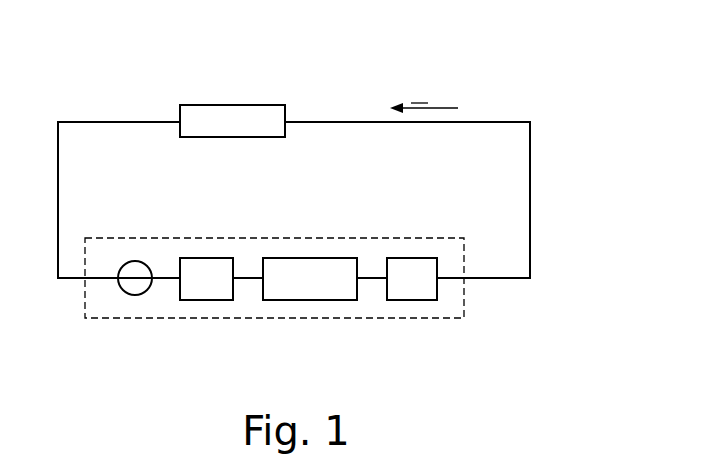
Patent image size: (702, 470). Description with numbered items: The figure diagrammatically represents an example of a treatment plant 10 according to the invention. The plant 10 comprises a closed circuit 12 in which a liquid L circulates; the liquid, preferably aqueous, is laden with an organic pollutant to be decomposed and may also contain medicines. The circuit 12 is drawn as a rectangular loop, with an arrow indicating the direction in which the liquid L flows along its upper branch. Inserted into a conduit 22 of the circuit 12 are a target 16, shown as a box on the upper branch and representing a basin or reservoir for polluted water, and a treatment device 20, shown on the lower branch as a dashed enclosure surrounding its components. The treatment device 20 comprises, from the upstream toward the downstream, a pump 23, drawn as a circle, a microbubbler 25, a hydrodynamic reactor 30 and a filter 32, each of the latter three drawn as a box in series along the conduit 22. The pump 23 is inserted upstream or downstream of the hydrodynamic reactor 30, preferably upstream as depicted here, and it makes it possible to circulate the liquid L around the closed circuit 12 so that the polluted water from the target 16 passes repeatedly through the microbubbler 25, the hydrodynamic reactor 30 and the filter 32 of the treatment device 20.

The plant 10 is at (310, 210).
The closed circuit 12 is at (347, 120).
The target 16 is at (222, 115).
The treatment device 20 is at (283, 317).
The conduit 22 is at (172, 282).
The pump 23 is at (133, 273).
The microbubbler 25 is at (205, 292).
The hydrodynamic reactor 30 is at (330, 292).
The filter 32 is at (417, 292).